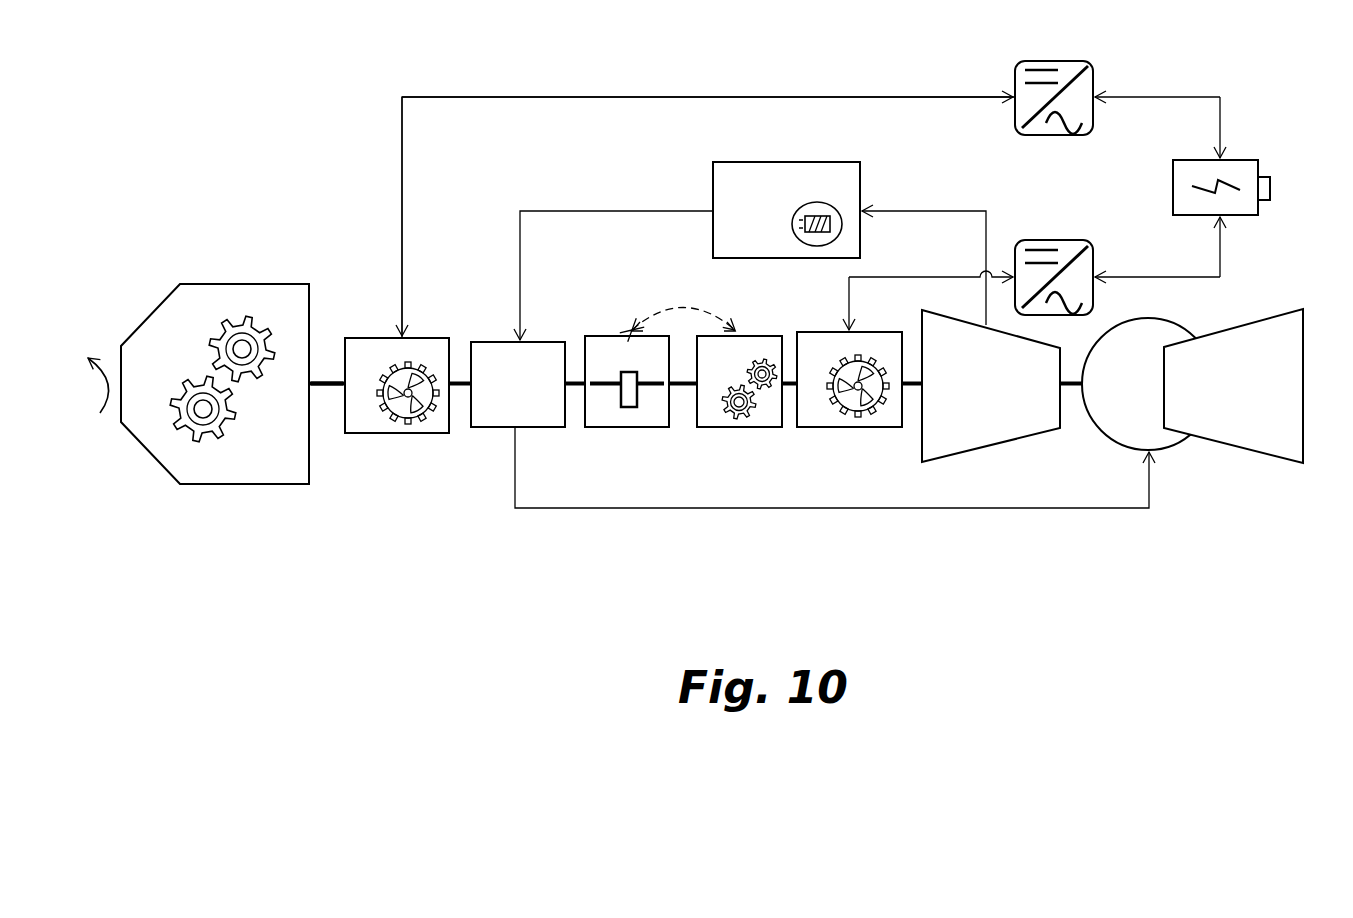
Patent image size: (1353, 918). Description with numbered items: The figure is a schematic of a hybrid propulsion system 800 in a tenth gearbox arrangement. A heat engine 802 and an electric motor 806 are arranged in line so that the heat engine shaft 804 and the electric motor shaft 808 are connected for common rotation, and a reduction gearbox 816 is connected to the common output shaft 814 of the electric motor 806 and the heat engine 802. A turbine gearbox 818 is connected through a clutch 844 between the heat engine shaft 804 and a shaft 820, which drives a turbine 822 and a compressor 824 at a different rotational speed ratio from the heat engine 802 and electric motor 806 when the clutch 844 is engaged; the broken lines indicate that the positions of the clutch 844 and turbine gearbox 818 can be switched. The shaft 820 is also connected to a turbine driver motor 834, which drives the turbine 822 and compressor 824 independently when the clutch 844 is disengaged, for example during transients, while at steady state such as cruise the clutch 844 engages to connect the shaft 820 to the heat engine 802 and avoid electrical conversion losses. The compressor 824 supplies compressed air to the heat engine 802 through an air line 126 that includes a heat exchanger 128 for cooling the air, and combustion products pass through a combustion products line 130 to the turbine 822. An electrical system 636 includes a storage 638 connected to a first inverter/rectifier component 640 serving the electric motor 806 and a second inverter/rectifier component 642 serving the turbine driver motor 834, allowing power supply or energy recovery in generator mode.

The system 800 is at (278, 94).
The reduction gearbox 816 is at (245, 284).
The common output shaft 814 is at (331, 380).
The electric motor shaft 808 is at (789, 380).
The electric motor 806 is at (375, 433).
The heat engine shaft 804 is at (457, 380).
The heat engine 802 is at (538, 427).
The clutch 844 is at (630, 427).
The turbine gearbox 818 is at (750, 427).
The turbine driver motor 834 is at (830, 427).
The shaft 820 is at (912, 380).
The compressor 824 is at (1005, 440).
The turbine 822 is at (1230, 443).
The combustion products line 130 is at (815, 508).
The air line 126 is at (598, 210).
The heat exchanger 128 is at (860, 185).
The first inverter/rectifier component 640 is at (1093, 80).
The second inverter/rectifier component 642 is at (1093, 262).
The storage 638 is at (1258, 172).
The electrical system 636 is at (1216, 78).